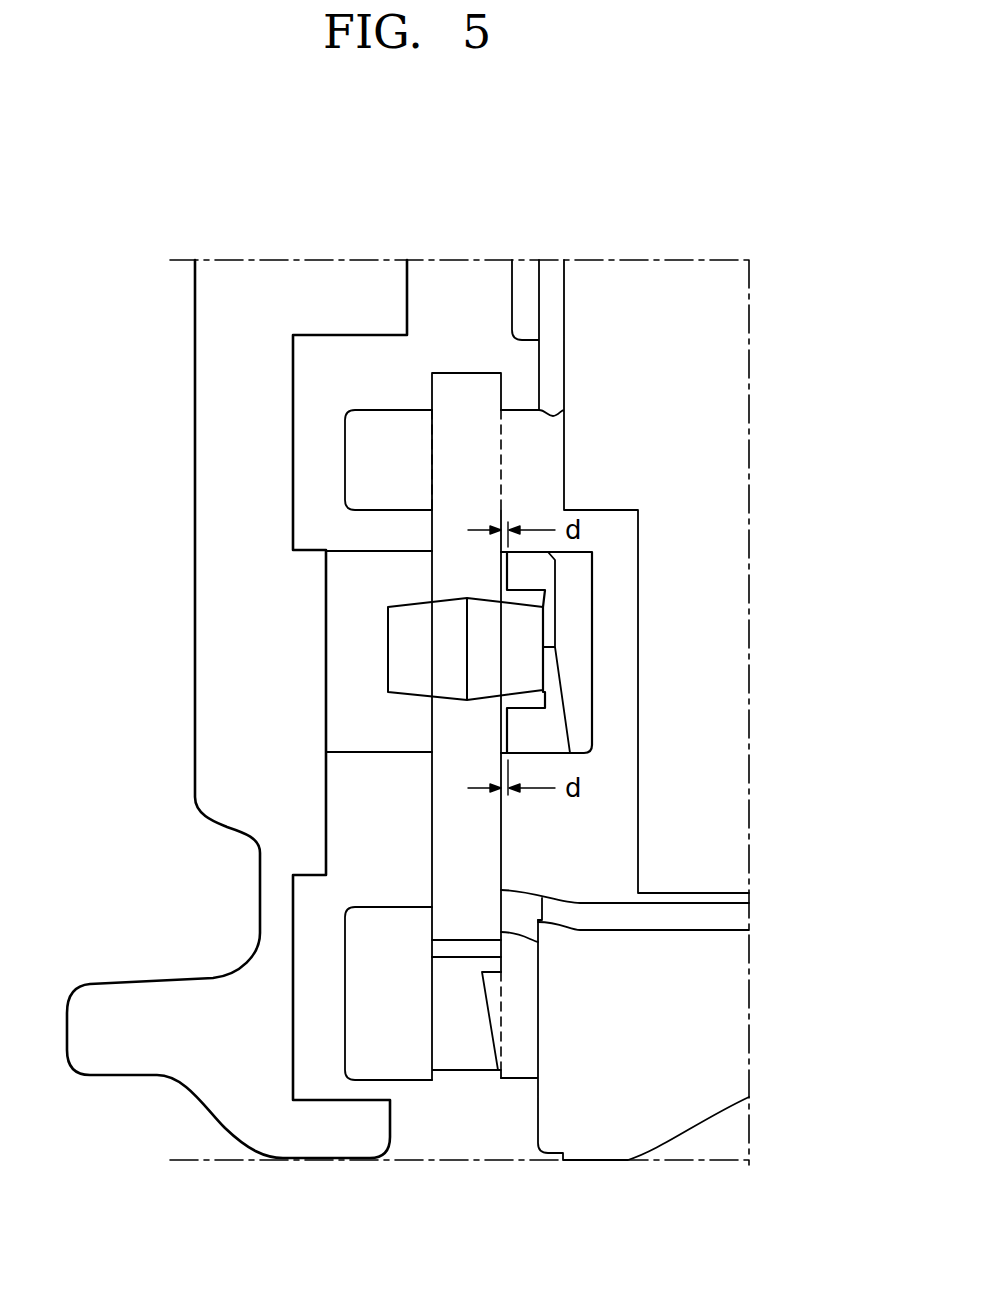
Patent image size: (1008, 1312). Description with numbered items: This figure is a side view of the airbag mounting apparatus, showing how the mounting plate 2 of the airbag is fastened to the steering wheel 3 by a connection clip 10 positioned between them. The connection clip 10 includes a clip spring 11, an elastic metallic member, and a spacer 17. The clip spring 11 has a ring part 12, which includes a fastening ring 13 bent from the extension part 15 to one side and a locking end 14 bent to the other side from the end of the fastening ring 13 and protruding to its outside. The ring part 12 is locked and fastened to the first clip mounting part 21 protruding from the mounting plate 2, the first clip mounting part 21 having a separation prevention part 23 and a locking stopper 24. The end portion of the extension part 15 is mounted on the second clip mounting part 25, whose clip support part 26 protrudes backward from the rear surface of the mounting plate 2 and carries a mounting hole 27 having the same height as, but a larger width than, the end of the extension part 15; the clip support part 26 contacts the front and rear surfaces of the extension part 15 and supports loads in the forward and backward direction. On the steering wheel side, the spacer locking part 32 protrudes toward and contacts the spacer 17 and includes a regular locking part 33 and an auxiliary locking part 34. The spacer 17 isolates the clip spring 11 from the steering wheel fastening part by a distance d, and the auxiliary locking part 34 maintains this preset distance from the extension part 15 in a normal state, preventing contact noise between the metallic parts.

The mounting plate 2 is at (685, 408).
The steering wheel 3 is at (243, 578).
The connection clip 10 is at (292, 726).
The clip spring 11 is at (424, 782).
The ring part 12 is at (652, 980).
The fastening ring 13 is at (462, 993).
The locking end 14 is at (487, 948).
The extension part 15 is at (463, 838).
The spacer 17 is at (428, 648).
The first clip mounting part 21 is at (336, 962).
The separation prevention part 23 is at (375, 1035).
The locking stopper 24 is at (493, 1012).
The second clip mounting part 25 is at (297, 463).
The clip support part 26 is at (376, 431).
The mounting hole 27 is at (430, 475).
The spacer locking part 32 is at (692, 632).
The regular locking part 33 is at (552, 637).
The auxiliary locking part 34 is at (521, 573).